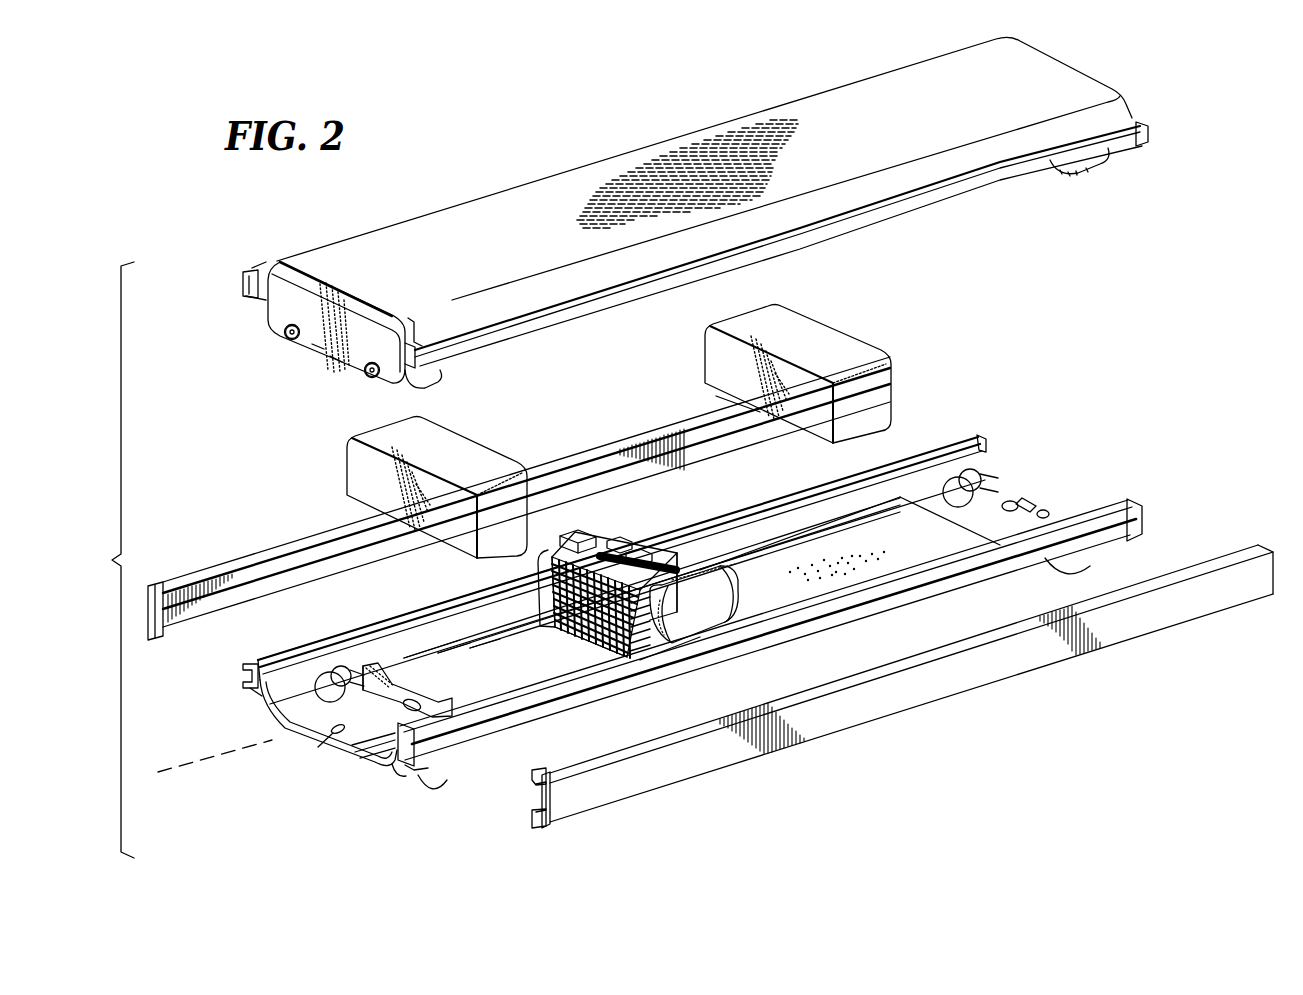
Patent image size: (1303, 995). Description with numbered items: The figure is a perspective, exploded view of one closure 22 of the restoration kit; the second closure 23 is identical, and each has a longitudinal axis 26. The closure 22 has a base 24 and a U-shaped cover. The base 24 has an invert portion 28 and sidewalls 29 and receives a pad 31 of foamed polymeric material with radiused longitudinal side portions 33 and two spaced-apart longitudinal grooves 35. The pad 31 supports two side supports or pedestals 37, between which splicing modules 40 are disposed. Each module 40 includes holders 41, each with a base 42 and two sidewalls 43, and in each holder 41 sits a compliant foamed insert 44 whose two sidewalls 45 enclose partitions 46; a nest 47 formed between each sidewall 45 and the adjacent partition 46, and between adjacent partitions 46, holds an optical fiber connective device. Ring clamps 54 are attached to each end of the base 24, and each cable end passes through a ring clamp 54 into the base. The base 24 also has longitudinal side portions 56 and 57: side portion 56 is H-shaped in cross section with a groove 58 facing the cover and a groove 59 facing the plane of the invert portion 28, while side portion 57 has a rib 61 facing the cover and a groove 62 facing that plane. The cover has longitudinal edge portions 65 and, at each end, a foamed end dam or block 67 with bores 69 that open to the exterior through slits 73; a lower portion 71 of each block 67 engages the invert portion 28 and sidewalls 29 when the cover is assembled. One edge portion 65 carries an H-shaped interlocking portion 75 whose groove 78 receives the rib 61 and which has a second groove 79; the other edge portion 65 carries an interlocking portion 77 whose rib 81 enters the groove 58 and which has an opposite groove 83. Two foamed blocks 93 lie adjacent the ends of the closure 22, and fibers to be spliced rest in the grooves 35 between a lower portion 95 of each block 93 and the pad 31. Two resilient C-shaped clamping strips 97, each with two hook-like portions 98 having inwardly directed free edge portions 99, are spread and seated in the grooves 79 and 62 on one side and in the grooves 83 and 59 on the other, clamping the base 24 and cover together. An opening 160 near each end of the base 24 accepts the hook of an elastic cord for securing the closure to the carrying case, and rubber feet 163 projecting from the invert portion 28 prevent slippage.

The first closure 22 is at (83, 570).
The second closure 23 is at (358, 764).
The base 24 is at (661, 148).
The longitudinal axis 26 is at (165, 772).
The invert portion 28 is at (275, 713).
The sidewalls 29 is at (401, 776).
The pad 31 is at (470, 648).
The side portions 33 is at (404, 655).
The grooves 35 is at (438, 652).
The pedestals 37 is at (738, 610).
The splicing module 40 is at (597, 664).
The holder 41 is at (650, 640).
The base 42 is at (590, 652).
The sidewalls 43 is at (548, 632).
The insert 44 is at (660, 550).
The sidewalls 45 is at (585, 522).
The partitions 46 is at (653, 526).
The nest 47 is at (622, 538).
The ring clamp 54 is at (345, 300).
The side portion 56 is at (452, 735).
The side portion 57 is at (243, 678).
The groove 58 is at (470, 708).
The groove 59 is at (433, 776).
The rib 61 is at (264, 658).
The groove 62 is at (253, 693).
The edge portions 65 is at (278, 262).
The end block 67 is at (318, 349).
The bores 69 is at (284, 334).
The lower portion 71 is at (334, 362).
The slits 73 is at (366, 384).
The interlocking portion 75 is at (243, 280).
The interlocking portion 77 is at (488, 332).
The groove 78 is at (248, 296).
The groove 79 is at (258, 272).
The rib 81 is at (420, 380).
The groove 83 is at (417, 348).
The block 93 is at (820, 332).
The lower portion 95 is at (716, 396).
The clamping strip 97 is at (170, 584).
The hook-like portions 98 is at (542, 772).
The free edge portions 99 is at (532, 790).
The opening 160 is at (318, 747).
The feet 163 is at (1090, 568).